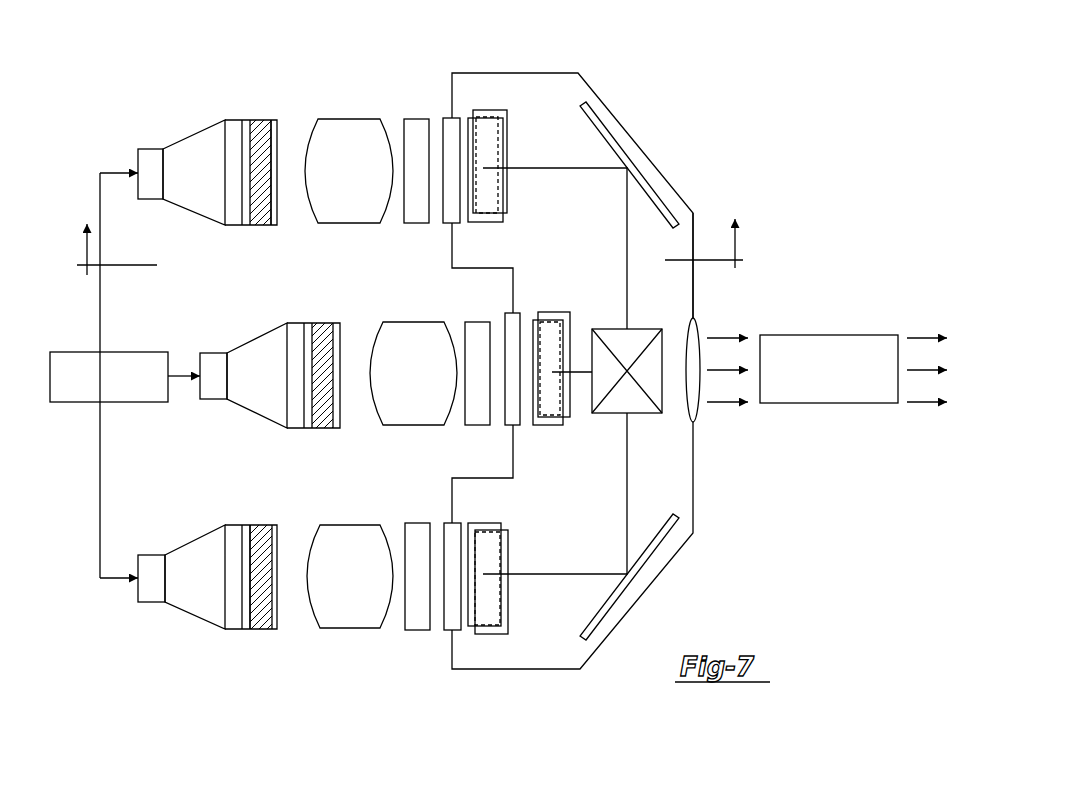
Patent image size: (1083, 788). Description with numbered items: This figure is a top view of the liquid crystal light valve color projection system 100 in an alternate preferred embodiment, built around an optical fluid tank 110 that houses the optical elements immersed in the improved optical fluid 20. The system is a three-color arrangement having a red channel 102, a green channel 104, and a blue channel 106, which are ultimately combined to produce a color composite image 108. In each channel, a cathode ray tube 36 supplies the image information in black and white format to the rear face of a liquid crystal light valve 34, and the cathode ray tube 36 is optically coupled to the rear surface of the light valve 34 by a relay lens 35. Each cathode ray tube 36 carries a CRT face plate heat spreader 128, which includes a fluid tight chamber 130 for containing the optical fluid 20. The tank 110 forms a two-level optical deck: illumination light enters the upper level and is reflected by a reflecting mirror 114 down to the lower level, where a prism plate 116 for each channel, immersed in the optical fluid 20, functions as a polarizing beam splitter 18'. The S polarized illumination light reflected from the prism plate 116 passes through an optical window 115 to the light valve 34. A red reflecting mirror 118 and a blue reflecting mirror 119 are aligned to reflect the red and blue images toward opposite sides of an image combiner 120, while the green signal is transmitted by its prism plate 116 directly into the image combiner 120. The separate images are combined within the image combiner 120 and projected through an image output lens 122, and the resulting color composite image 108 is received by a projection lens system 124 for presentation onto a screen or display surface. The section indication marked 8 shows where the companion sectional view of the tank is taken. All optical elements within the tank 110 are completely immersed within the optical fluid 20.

The liquid crystal light valve color projection system 100 is at (778, 185).
The red channel 102 is at (237, 70).
The green channel 104 is at (75, 402).
The blue channel 106 is at (253, 500).
The color composite image 108 is at (723, 402).
The optical fluid tank 110 is at (497, 669).
The reflecting mirror 114 is at (490, 135).
The optical window 115 is at (455, 212).
The prism plate 116 is at (510, 130).
The red reflecting mirror 118 is at (628, 140).
The blue reflecting mirror 119 is at (643, 565).
The image combiner 120 is at (645, 413).
The image output lens 122 is at (700, 325).
The projection lens system 124 is at (858, 403).
The CRT face plate heat spreader 128 is at (247, 634).
The fluid tight chamber 130 is at (272, 622).
The polarizing beam splitter 18' is at (567, 381).
The optical fluid 20 is at (669, 304).
The liquid crystal light valve 34 is at (418, 125).
The relay lens 35 is at (360, 181).
The cathode ray tube 36 is at (194, 198).
The section line 8- 8 is at (412, 247).